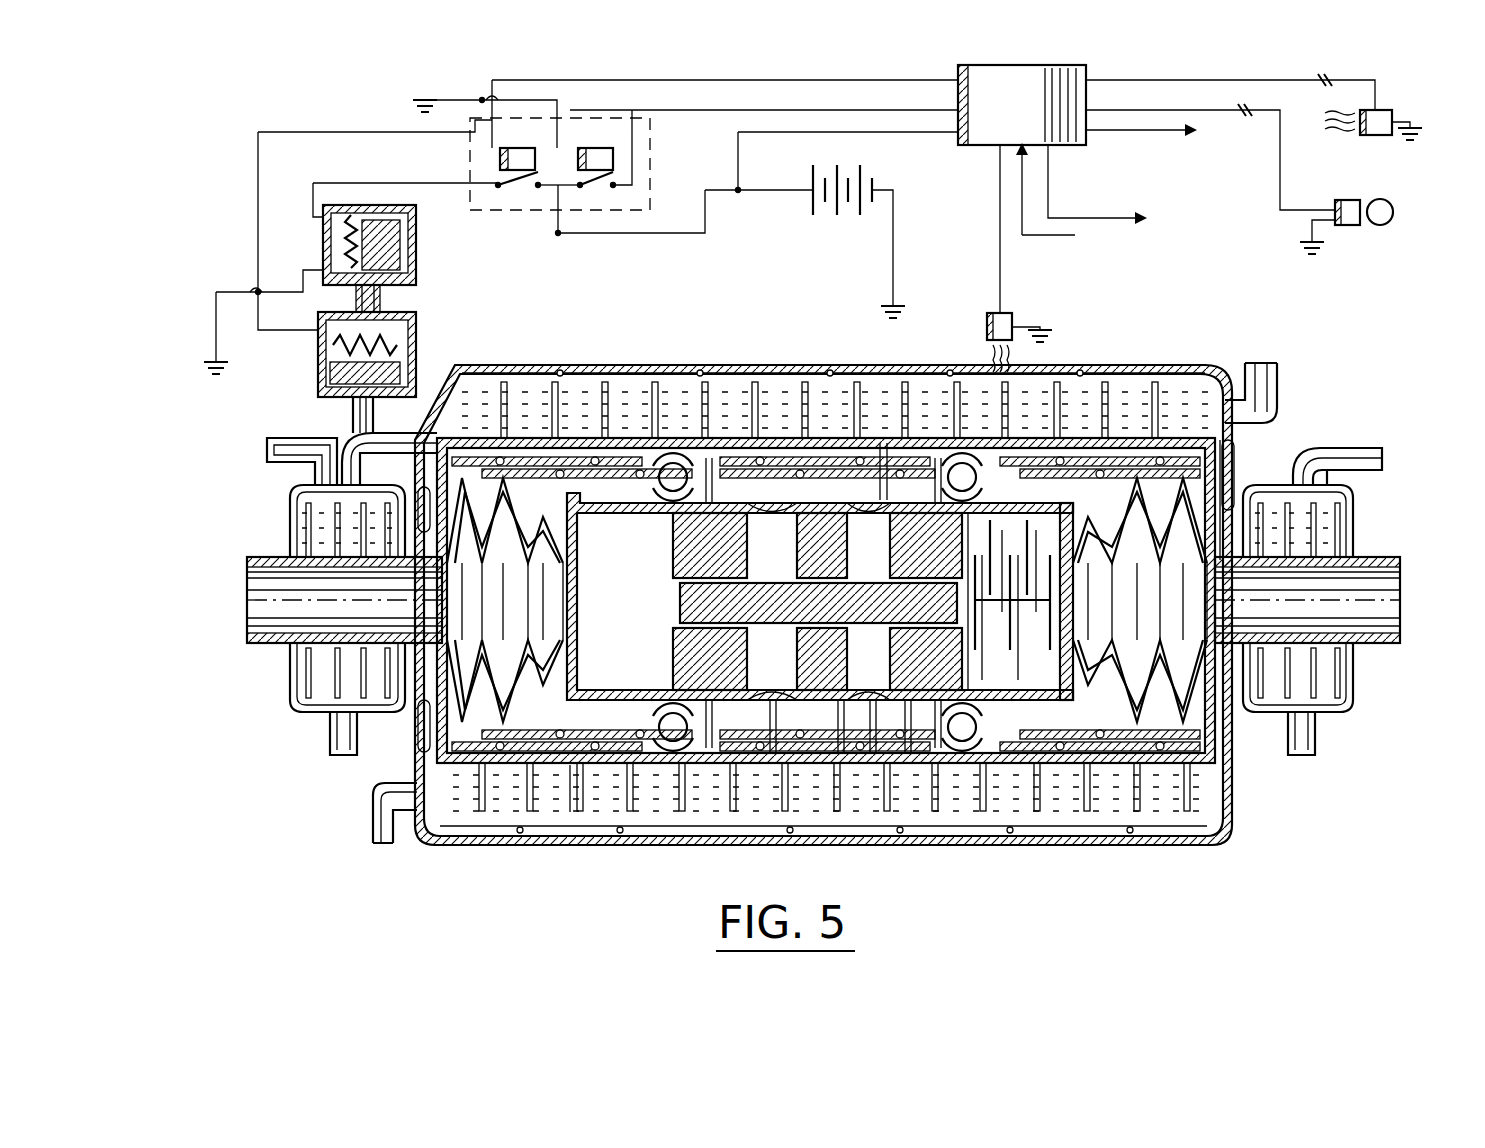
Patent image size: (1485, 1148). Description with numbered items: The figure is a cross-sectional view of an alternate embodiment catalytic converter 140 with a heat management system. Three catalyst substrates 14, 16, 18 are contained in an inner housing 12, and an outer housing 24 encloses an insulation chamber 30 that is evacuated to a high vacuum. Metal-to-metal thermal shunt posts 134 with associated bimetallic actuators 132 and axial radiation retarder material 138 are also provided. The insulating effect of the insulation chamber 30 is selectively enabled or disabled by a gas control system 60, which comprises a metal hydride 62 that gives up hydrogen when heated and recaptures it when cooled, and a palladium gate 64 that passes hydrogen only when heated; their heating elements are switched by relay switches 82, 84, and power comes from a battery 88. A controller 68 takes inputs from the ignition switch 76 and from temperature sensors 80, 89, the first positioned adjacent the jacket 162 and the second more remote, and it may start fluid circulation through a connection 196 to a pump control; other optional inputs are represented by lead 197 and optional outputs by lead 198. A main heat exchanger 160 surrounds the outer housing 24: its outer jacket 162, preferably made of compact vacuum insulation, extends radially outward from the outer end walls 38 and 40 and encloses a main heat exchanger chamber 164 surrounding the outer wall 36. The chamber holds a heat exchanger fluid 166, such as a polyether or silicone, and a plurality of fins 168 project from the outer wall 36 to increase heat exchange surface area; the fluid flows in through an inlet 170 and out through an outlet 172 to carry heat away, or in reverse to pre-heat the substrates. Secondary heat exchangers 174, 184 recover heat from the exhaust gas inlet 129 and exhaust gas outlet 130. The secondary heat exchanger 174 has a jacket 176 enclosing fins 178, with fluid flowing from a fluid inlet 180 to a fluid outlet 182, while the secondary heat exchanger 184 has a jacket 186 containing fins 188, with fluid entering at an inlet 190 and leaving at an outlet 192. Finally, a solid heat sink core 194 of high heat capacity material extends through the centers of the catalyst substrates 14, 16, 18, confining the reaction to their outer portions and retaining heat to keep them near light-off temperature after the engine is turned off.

The inner housing 12 is at (645, 700).
The catalyst substrate 14 is at (670, 672).
The catalyst substrate 16 is at (798, 660).
The catalyst substrate 18 is at (912, 672).
The outer housing 24 is at (575, 790).
The insulation chamber 30 is at (549, 508).
The outer wall 36 is at (895, 450).
The outer end wall 38 is at (412, 735).
The outer end wall 40 is at (1236, 462).
The gas control system 60 is at (333, 301).
The metal hydride 62 is at (418, 255).
The palladium gate 64 is at (395, 356).
The controller 68 is at (1065, 147).
The ignition switch 76 is at (1365, 176).
The temperature sensor 80 is at (990, 326).
The relay switch 82 is at (615, 160).
The relay switch 84 is at (497, 166).
The battery 88 is at (862, 176).
The temperature sensor 89 is at (1382, 136).
The exhaust gas inlet 129 is at (268, 645).
The exhaust gas outlet 130 is at (1365, 665).
The bimetallic actuator 132 is at (908, 722).
The thermal shunt post 134 is at (850, 722).
The axial radiation retarder material 138 is at (1045, 560).
The catalytic converter 140 is at (1222, 343).
The main heat exchanger 160 is at (618, 362).
The outer jacket 162 is at (790, 405).
The main heat exchanger chamber 164 is at (730, 405).
The heat exchanger fluid 166 is at (362, 490).
The fins 168 is at (545, 404).
The inlet 170 is at (1279, 390).
The outlet 172 is at (372, 838).
The secondary heat exchanger 174 is at (299, 521).
The jacket 176 is at (290, 688).
The fins 178 is at (362, 537).
The fluid inlet 180 is at (290, 460).
The fluid outlet 182 is at (328, 746).
The secondary heat exchanger 184 is at (1341, 521).
The jacket 186 is at (1353, 710).
The fins 188 is at (1313, 545).
The inlet 190 is at (1365, 478).
The outlet 192 is at (1316, 762).
The solid heat sink core 194 is at (685, 572).
The connection 196 is at (1142, 136).
The lead 197 is at (1075, 236).
The lead 198 is at (1098, 218).